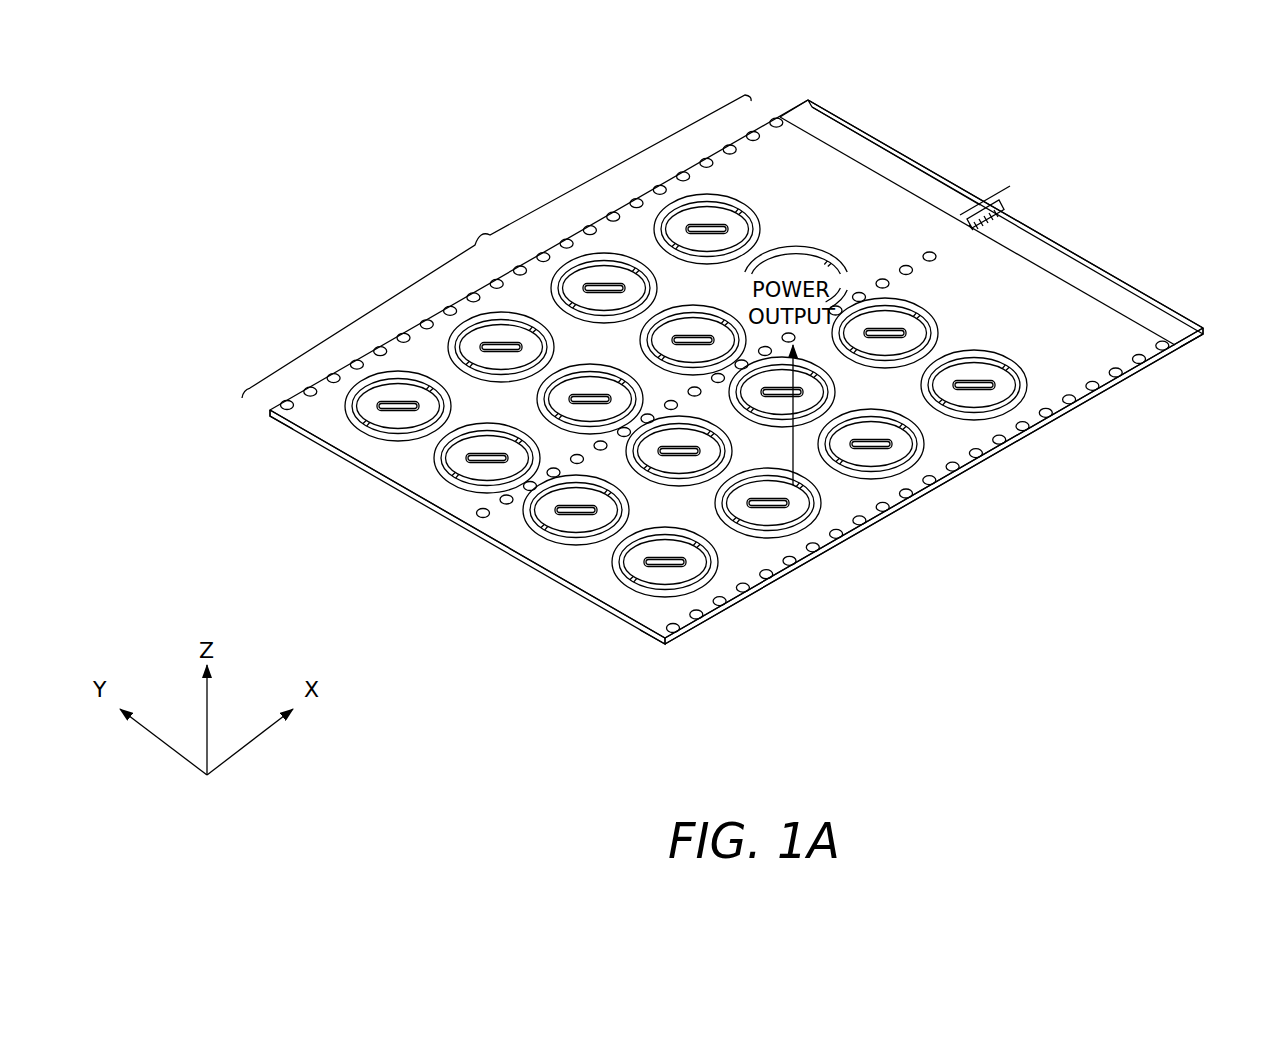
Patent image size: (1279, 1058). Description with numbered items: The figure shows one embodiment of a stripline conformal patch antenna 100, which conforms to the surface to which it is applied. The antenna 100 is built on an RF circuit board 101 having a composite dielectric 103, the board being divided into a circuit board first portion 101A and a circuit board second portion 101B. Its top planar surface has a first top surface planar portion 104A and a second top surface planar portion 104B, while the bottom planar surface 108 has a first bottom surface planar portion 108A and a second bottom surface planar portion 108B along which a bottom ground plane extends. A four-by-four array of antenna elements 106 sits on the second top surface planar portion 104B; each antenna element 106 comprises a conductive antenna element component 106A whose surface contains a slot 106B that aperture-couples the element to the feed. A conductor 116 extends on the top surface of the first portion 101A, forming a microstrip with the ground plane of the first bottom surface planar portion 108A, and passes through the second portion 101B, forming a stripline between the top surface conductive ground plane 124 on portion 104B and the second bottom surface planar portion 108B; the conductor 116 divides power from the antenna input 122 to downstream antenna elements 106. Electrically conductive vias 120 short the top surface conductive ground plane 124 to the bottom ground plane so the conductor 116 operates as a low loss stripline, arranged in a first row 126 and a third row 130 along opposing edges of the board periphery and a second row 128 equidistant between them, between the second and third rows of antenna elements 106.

The stripline conformal patch antenna 100 is at (530, 83).
The RF circuit board 101 is at (318, 445).
The circuit board first portion 101A is at (790, 103).
The circuit board second portion 101B is at (476, 245).
The composite dielectric 103 is at (395, 452).
The first top surface planar portion 104A is at (1172, 306).
The second top surface planar portion 104B is at (1103, 347).
The antenna element 106 is at (738, 559).
The conductive antenna element component 106A is at (767, 515).
The slot 106B is at (780, 507).
The bottom planar surface 108 is at (869, 587).
The first bottom surface planar portion 108A is at (1190, 352).
The second bottom surface planar portion 108B is at (950, 490).
The conductor 116 is at (985, 220).
The electrically conductive vias 120 is at (508, 506).
The antenna input 122 is at (1008, 208).
The top surface conductive ground plane 124 is at (820, 213).
The first row of vias 126 is at (275, 422).
The second row of vias 128 is at (463, 530).
The third row of vias 130 is at (657, 645).